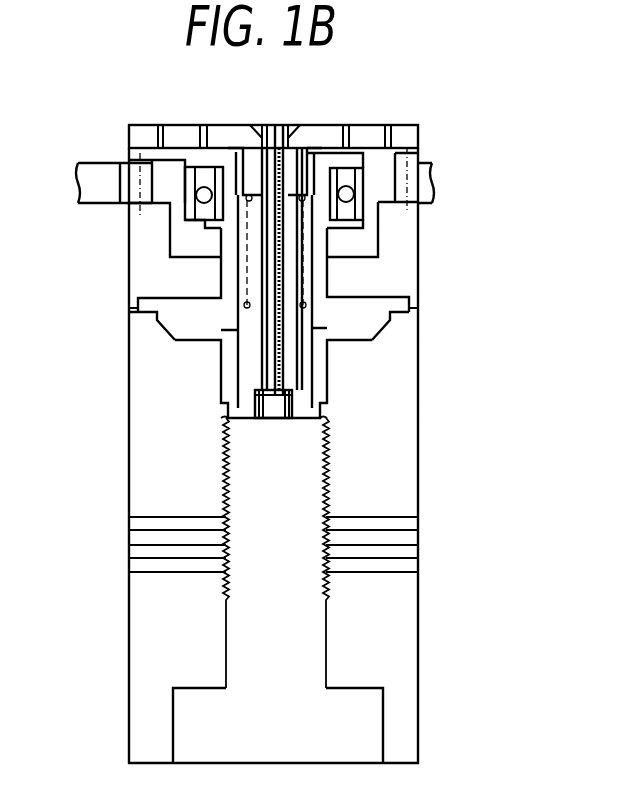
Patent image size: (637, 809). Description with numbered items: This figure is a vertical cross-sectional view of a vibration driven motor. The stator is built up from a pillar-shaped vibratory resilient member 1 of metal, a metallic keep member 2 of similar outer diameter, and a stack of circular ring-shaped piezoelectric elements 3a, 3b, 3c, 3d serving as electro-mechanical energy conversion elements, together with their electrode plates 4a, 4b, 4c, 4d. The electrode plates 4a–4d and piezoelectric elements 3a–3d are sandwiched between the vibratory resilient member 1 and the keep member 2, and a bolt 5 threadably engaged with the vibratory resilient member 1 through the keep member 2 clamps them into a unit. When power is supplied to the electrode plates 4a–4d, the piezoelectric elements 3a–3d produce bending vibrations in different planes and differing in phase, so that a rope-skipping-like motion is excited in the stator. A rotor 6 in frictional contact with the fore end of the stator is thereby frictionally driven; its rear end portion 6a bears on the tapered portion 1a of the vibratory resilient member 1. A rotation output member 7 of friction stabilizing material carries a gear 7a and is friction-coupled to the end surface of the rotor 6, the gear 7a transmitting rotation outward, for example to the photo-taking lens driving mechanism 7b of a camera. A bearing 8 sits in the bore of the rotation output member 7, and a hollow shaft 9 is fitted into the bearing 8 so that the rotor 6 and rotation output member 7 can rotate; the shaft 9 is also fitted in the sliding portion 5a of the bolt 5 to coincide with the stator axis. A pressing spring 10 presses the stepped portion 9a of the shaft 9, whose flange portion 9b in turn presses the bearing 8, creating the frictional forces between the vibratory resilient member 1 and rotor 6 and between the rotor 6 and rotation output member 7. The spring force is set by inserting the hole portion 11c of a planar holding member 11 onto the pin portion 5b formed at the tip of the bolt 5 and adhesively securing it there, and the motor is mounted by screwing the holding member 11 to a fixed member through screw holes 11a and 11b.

The vibratory resilient member 1 is at (400, 420).
The tapered portion 1a is at (400, 342).
The keep member 2 is at (400, 640).
The piezoelectric element 3a is at (418, 520).
The piezoelectric element 3b is at (418, 532).
The piezoelectric element 3c is at (418, 547).
The piezoelectric element 3d is at (418, 562).
The electrode plate 4a is at (129, 530).
The electrode plate 4b is at (129, 545).
The electrode plate 4c is at (129, 558).
The electrode plate 4d is at (129, 575).
The bolt 5 is at (200, 720).
The sliding portion 5a is at (262, 405).
The pin portion 5b is at (300, 180).
The rotor 6 is at (392, 266).
The rear end portion 6a is at (398, 322).
The rotation output member 7 is at (368, 232).
The gear 7a is at (412, 160).
The photo-taking lens driving mechanism 7b is at (110, 180).
The bearing 8 is at (203, 197).
The hollow shaft 9 is at (240, 290).
The stepped portion 9a is at (237, 332).
The flange portion 9b is at (233, 160).
The pressing spring 10 is at (346, 168).
The holding member 11 is at (215, 130).
The screw hole 11a is at (370, 133).
The screw hole 11b is at (172, 135).
The hole portion 11c is at (275, 135).